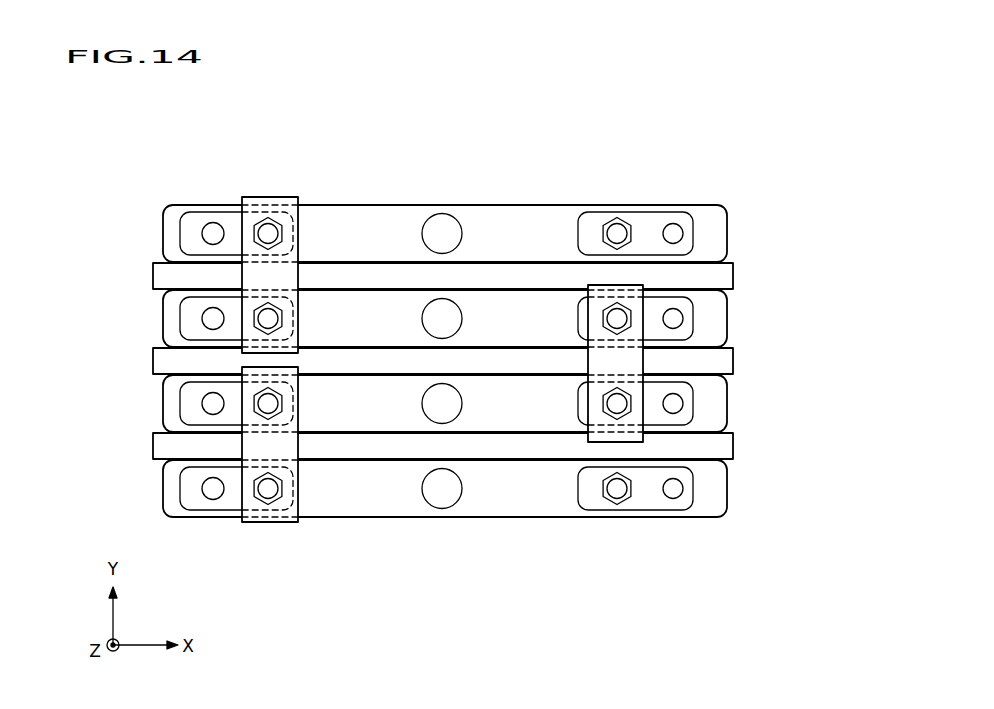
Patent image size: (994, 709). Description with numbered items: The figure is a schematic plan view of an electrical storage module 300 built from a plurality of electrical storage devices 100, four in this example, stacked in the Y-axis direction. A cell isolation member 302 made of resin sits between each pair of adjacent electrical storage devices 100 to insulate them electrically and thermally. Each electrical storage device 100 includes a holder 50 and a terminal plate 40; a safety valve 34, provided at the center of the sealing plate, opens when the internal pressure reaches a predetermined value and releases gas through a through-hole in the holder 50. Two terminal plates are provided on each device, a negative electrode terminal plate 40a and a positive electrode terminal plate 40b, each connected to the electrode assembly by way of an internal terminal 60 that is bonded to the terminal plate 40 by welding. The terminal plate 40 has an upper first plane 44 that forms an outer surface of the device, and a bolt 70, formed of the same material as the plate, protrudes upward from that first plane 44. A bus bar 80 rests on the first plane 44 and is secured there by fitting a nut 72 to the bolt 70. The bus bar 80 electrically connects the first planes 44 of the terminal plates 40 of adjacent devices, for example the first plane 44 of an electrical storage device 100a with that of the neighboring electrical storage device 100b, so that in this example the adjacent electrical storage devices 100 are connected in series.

The electrical storage module 300 is at (749, 113).
The electrical storage device 100 is at (501, 361).
The electrical storage device 100a is at (733, 418).
The electrical storage device 100b is at (733, 510).
The cell isolation member 302 is at (180, 274).
The holder 50 is at (501, 361).
The safety valve 34 is at (437, 228).
The terminal plate 40 is at (435, 354).
The negative electrode terminal plate 40a is at (195, 224).
The positive electrode terminal plate 40b is at (678, 221).
The first plane 44 is at (652, 220).
The internal terminal 60 is at (674, 228).
The bus bar 80 is at (270, 217).
The bolt 70 is at (284, 220).
The nut 72 is at (262, 224).